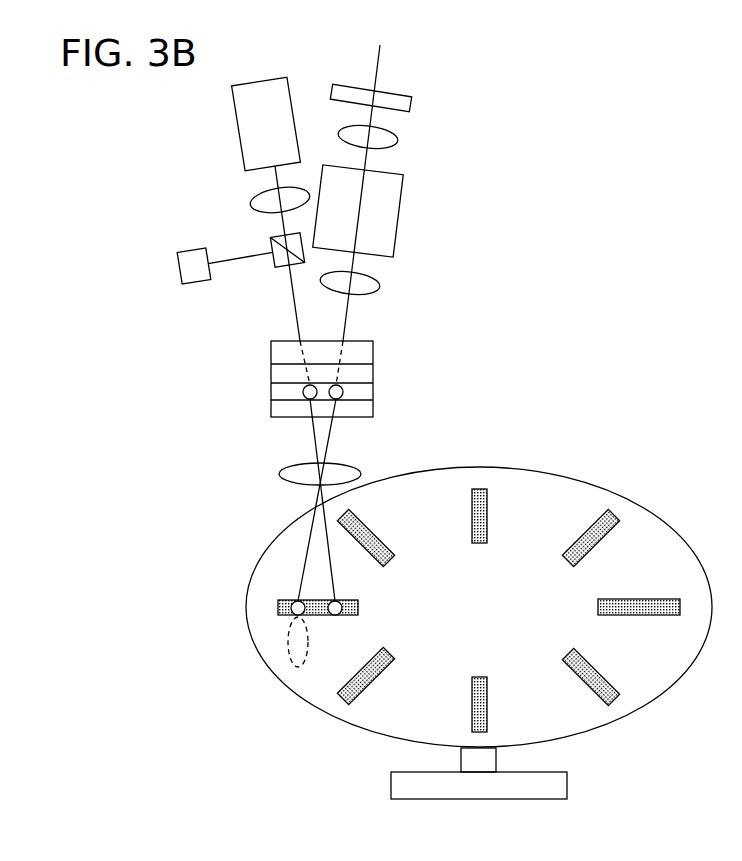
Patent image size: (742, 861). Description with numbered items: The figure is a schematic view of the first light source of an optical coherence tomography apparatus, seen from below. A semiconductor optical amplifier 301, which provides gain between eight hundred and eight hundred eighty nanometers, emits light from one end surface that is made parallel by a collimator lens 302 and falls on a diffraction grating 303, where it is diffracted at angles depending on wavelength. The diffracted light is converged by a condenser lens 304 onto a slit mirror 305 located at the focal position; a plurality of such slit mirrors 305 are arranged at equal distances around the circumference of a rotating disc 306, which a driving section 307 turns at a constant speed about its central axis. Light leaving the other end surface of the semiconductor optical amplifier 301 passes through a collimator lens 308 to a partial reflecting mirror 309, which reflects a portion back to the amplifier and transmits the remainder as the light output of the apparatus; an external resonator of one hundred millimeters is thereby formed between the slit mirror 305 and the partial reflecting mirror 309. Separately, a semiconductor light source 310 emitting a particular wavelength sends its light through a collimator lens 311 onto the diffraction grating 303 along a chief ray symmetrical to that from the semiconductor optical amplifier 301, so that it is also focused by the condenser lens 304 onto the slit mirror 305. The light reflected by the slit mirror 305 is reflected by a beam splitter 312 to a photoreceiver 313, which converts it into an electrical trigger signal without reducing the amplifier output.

The semiconductor optical amplifier 301 is at (402, 218).
The collimator lens 302 is at (380, 287).
The diffraction grating 303 is at (373, 408).
The condenser lens 304 is at (280, 473).
The slit mirror 305 is at (358, 608).
The rotating disc 306 is at (628, 715).
The driving section 307 is at (391, 778).
The collimator lens 308 is at (398, 138).
The partial reflecting mirror 309 is at (412, 104).
The semiconductor light source 310 is at (232, 107).
The collimator lens 311 is at (250, 199).
The beam splitter 312 is at (274, 265).
The photoreceiver 313 is at (177, 262).